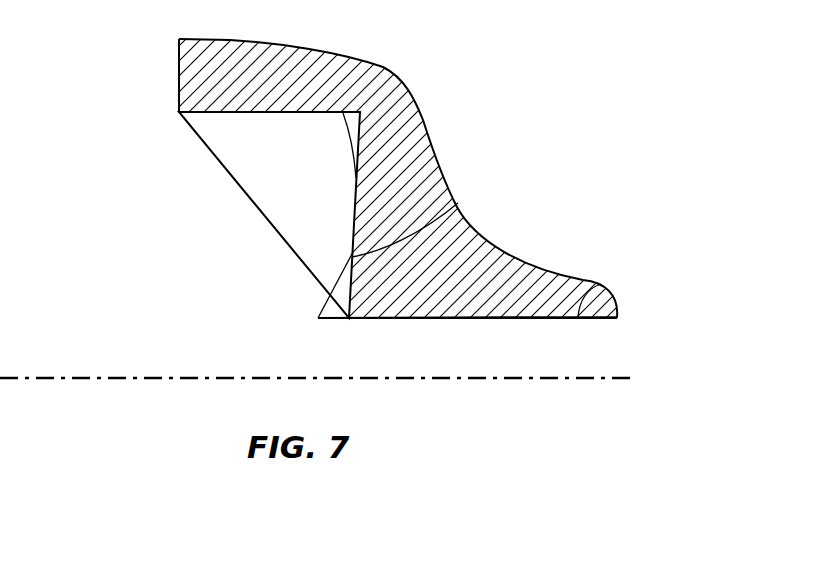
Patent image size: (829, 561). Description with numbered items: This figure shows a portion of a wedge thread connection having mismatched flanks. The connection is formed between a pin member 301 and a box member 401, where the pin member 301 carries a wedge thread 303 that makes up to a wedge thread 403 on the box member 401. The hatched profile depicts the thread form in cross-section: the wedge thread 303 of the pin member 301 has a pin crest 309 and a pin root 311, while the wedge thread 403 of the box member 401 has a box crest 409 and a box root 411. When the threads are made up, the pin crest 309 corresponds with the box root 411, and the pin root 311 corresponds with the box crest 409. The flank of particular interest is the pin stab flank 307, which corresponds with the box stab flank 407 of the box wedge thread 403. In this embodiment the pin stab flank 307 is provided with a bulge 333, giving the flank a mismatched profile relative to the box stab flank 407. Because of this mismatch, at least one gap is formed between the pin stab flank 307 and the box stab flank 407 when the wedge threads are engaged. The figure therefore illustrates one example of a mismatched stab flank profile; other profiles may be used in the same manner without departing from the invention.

The pin member 301 is at (172, 334).
The wedge thread 303 is at (207, 175).
The pin stab flank 307 is at (343, 270).
The pin crest 309 is at (222, 110).
The pin root 311 is at (558, 319).
The bulge 333 is at (355, 193).
The box member 401 is at (441, 27).
The wedge thread 403 is at (561, 163).
The box stab flank 407 is at (445, 211).
The box crest 409 is at (586, 292).
The box root 411 is at (203, 112).